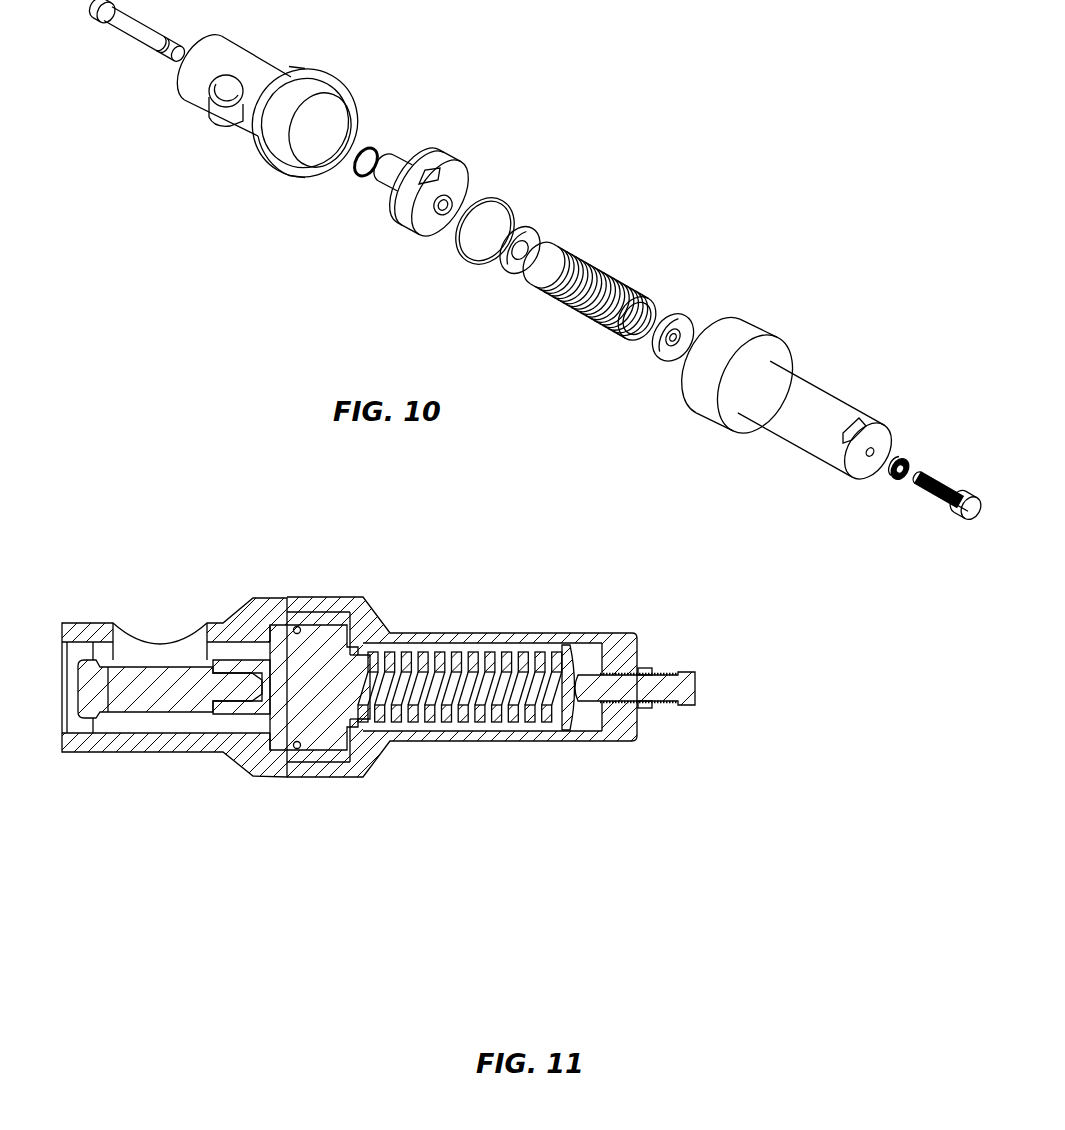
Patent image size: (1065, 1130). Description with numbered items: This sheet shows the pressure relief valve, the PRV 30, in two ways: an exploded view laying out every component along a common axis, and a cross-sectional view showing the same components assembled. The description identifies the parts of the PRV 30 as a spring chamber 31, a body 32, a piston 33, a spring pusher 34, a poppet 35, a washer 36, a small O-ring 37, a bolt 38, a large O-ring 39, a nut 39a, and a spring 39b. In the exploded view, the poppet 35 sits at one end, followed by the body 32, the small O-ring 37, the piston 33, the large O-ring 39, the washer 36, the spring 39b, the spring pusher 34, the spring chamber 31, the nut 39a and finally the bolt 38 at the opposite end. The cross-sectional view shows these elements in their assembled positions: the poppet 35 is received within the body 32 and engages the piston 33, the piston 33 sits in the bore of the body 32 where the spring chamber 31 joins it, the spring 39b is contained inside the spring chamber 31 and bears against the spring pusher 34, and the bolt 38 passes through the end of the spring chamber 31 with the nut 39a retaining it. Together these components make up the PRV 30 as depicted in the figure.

In FIG. 10, the PRV 30 is at (704, 104).
In FIG. 11, the PRV 30 is at (497, 740).
In FIG. 10, the spring chamber 31 is at (712, 430).
In FIG. 11, the spring chamber 31 is at (517, 632).
In FIG. 10, the body 32 is at (340, 82).
In FIG. 11, the body 32 is at (238, 613).
In FIG. 10, the piston 33 is at (404, 230).
In FIG. 11, the piston 33 is at (312, 677).
In FIG. 10, the spring pusher 34 is at (655, 363).
In FIG. 10, the poppet 35 is at (145, 50).
In FIG. 11, the poppet 35 is at (168, 675).
In FIG. 10, the washer 36 is at (505, 279).
In FIG. 10, the small O-ring 37 is at (351, 172).
In FIG. 10, the bolt 38 is at (960, 521).
In FIG. 11, the bolt 38 is at (697, 688).
In FIG. 10, the large O-ring 39 is at (456, 260).
In FIG. 10, the nut 39a is at (895, 483).
In FIG. 11, the nut 39a is at (640, 665).
In FIG. 10, the spring 39b is at (578, 315).
In FIG. 11, the spring 39b is at (477, 655).